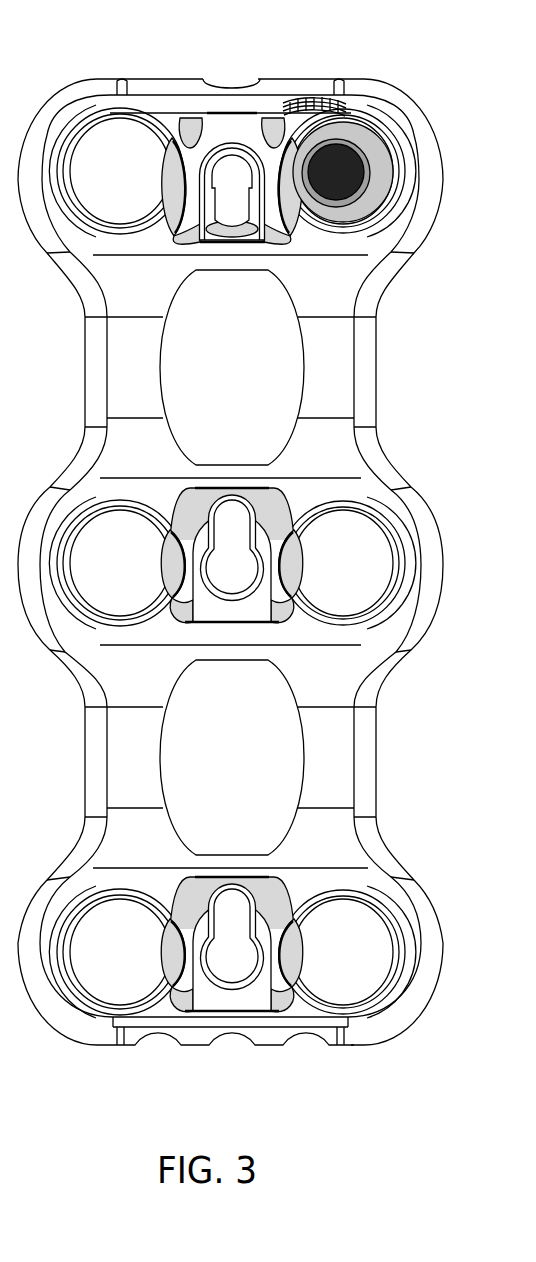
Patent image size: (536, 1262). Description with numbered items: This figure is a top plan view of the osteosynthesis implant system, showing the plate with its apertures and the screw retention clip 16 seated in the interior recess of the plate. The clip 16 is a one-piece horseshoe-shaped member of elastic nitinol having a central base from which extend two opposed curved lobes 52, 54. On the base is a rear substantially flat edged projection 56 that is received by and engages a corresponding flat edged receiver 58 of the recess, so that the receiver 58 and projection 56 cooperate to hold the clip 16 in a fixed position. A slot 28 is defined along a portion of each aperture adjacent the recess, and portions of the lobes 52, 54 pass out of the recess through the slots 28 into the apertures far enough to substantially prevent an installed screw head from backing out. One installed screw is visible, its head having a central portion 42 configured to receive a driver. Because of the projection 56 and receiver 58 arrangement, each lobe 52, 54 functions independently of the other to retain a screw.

The screw retention clip 16 is at (187, 128).
The slot 28 is at (185, 178).
The central portion 42 is at (353, 167).
The curved lobe 52 is at (165, 160).
The curved lobe 54 is at (306, 100).
The flat edged projection 56 is at (232, 240).
The flat edged receiver 58 is at (245, 243).